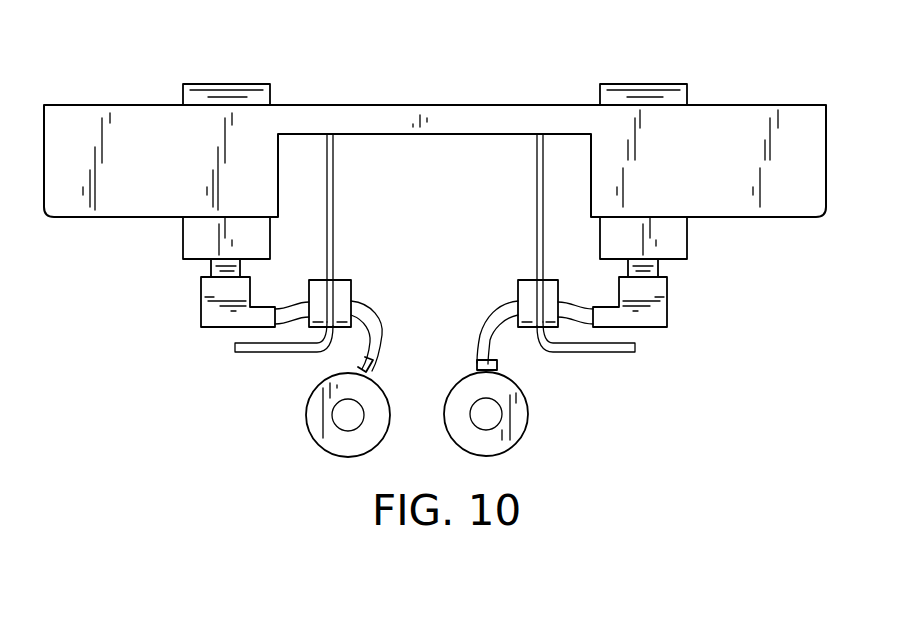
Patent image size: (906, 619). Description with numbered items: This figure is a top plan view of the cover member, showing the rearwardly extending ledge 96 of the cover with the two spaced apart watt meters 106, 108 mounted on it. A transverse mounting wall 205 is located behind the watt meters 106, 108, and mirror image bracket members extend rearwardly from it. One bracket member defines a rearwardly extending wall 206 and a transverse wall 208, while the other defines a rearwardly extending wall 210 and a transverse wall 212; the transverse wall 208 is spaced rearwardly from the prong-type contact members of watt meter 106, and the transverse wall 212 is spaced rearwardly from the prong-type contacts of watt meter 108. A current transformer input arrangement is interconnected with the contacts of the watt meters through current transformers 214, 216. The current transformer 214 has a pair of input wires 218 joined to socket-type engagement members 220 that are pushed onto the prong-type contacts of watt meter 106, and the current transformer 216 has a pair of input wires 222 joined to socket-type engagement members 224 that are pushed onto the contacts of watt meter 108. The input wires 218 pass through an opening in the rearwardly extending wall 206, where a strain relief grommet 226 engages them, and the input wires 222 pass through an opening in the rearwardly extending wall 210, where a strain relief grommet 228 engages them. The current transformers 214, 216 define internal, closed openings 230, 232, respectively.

The rearwardly extending ledge 96 is at (170, 163).
The watt meter 108 is at (225, 78).
The watt meter 106 is at (643, 78).
The transverse mounting wall 205 is at (421, 104).
The rearwardly extending wall 210 is at (337, 175).
The rearwardly extending wall 206 is at (533, 175).
The transverse wall 212 is at (268, 353).
The transverse wall 208 is at (594, 353).
The strain relief grommet 228 is at (342, 279).
The strain relief grommet 226 is at (528, 279).
The input wires 222 is at (372, 322).
The input wires 218 is at (490, 327).
The socket-type engagement members 224 is at (210, 290).
The socket-type engagement members 220 is at (660, 290).
The current transformer 216 is at (313, 446).
The current transformer 214 is at (517, 446).
The internal closed opening 232 is at (347, 415).
The internal closed opening 230 is at (487, 412).